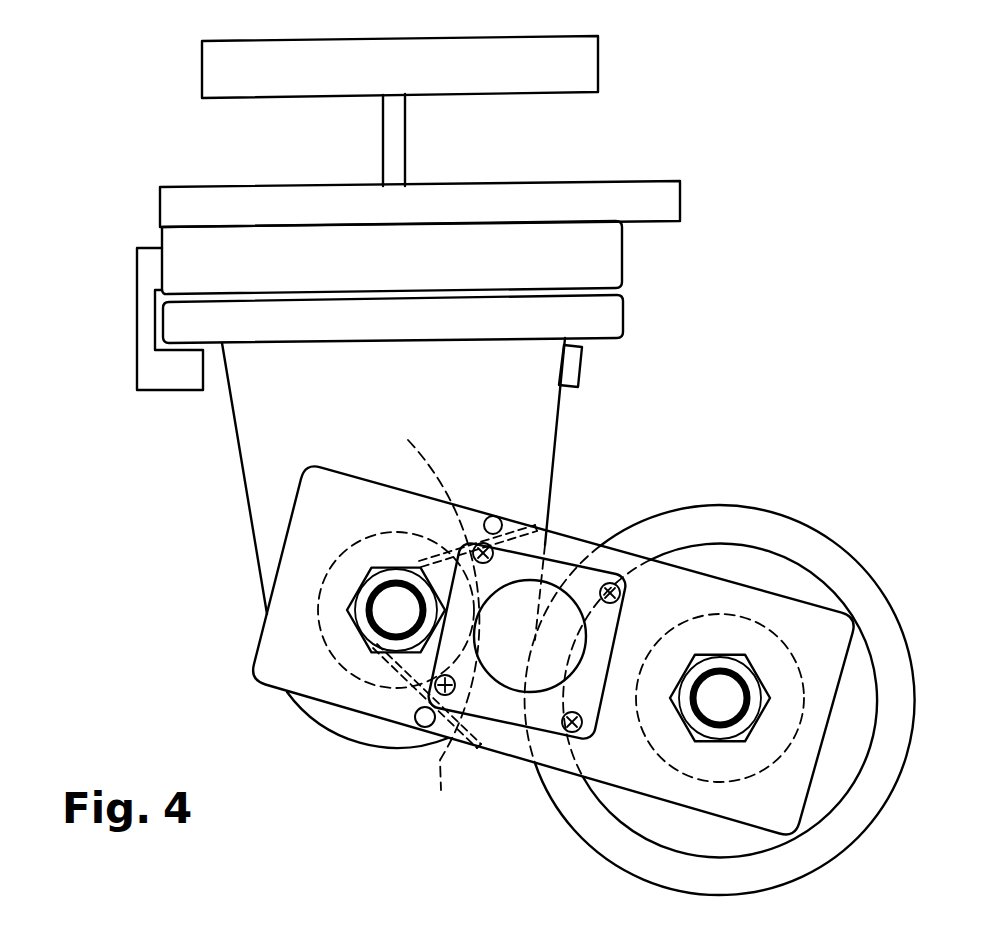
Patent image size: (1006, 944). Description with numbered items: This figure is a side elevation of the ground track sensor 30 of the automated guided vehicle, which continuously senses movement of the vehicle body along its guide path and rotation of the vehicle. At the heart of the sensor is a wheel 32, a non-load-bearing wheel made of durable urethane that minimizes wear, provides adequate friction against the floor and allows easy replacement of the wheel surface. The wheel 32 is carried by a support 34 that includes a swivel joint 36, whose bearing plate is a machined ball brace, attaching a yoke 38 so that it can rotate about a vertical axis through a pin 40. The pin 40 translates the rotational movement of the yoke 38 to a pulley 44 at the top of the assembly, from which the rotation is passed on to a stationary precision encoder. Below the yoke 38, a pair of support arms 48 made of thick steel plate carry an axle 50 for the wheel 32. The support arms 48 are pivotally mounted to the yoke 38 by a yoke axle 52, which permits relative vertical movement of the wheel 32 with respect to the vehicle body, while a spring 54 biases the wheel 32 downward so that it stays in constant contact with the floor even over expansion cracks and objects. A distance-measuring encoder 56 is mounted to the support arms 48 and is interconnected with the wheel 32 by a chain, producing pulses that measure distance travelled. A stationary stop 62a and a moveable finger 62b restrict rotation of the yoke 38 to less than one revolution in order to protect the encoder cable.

The ground track sensor 30 is at (690, 201).
The wheel 32 is at (908, 656).
The support 34 is at (232, 500).
The swivel joint 36 is at (622, 262).
The yoke 38 is at (563, 423).
The pin 40 is at (405, 121).
The pulley 44 is at (598, 75).
The support arms 48 is at (748, 586).
The axle 50 is at (750, 674).
The yoke axle 52 is at (358, 583).
The spring 54 is at (545, 618).
The distance-measuring encoder 56 is at (548, 580).
The stationary stop 62a is at (185, 390).
The moveable finger 62b is at (582, 358).